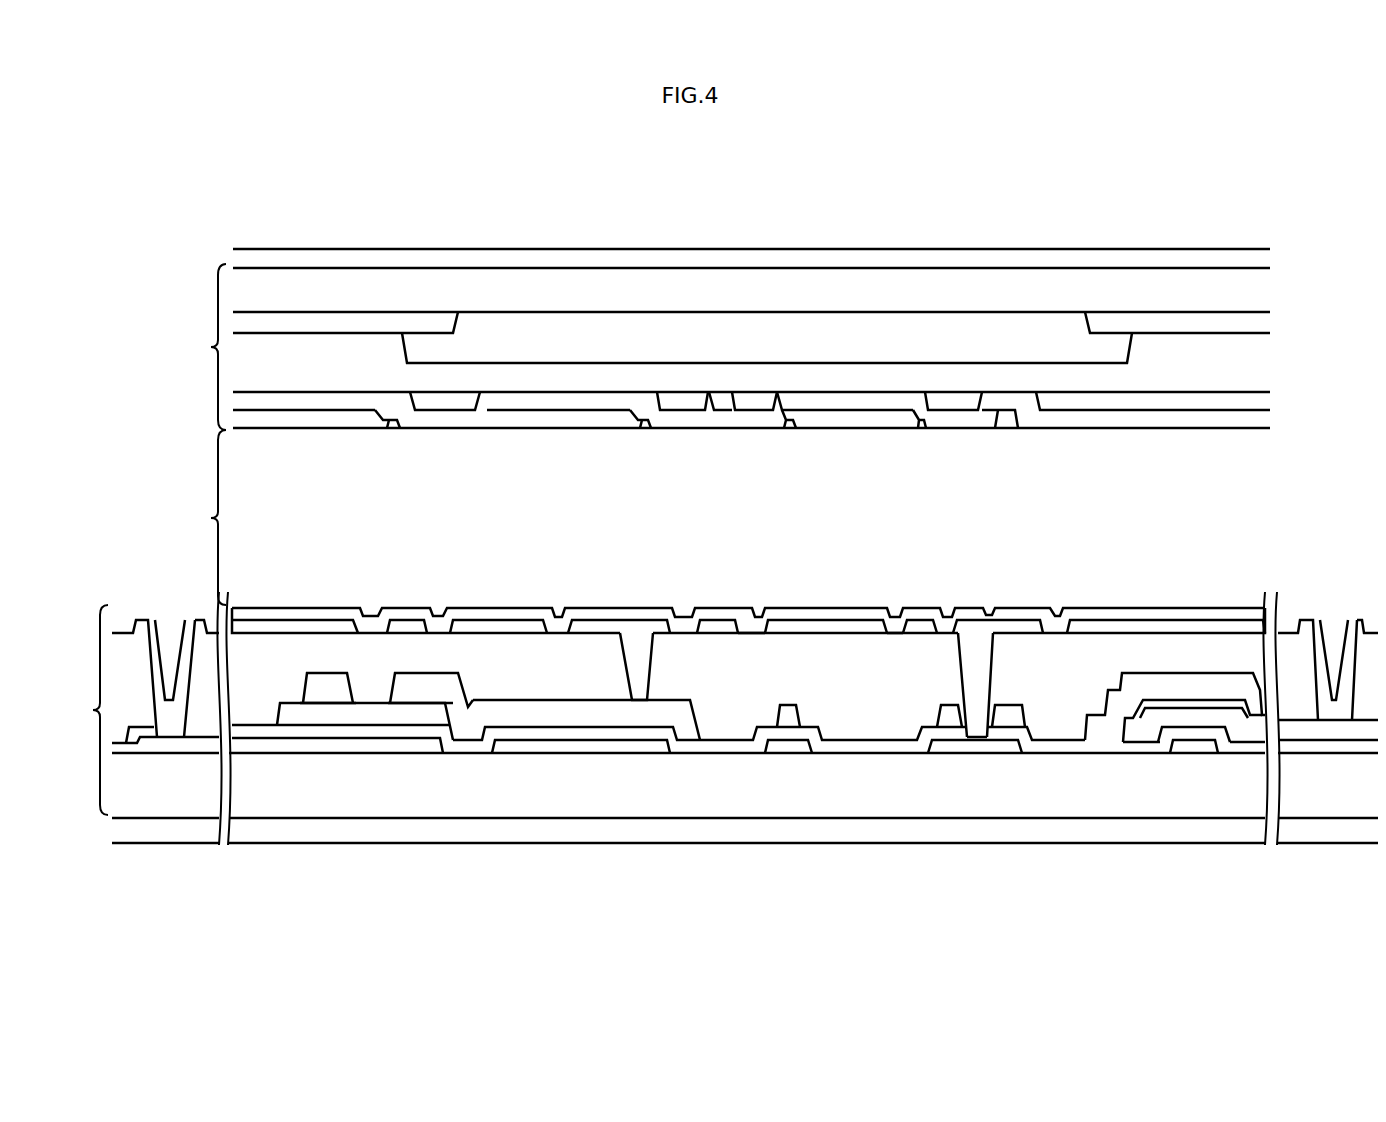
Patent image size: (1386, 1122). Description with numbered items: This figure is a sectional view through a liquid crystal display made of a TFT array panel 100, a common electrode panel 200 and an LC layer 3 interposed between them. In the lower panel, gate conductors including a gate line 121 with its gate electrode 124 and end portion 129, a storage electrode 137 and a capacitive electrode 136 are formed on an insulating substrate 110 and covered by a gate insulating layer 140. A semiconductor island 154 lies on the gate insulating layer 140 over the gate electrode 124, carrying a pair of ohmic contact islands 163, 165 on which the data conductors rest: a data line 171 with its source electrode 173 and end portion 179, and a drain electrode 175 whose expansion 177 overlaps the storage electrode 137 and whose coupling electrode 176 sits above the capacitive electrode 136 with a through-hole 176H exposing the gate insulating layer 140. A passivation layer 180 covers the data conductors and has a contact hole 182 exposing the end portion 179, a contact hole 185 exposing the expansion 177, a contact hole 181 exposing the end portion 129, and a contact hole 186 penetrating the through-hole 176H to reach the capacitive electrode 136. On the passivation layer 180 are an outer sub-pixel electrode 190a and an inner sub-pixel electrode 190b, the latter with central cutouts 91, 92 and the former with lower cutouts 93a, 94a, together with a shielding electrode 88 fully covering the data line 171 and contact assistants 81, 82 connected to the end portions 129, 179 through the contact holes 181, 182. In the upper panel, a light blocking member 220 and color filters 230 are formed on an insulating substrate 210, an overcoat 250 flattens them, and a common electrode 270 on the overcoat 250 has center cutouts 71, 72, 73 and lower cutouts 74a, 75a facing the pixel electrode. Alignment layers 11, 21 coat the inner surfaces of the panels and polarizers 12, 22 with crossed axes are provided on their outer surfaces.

The LC layer 3 is at (209, 517).
The alignment layer 11 is at (301, 606).
The polarizer 12 is at (123, 830).
The alignment layer 21 is at (288, 410).
The polarizer 22 is at (245, 258).
The center cutout 71 is at (981, 398).
The center cutout 72 is at (919, 398).
The center cutout 73 is at (783, 398).
The lower cutout 74a is at (481, 398).
The lower cutout 75a is at (377, 398).
The contact assistant 81 is at (145, 628).
The contact assistant 82 is at (1307, 626).
The shielding electrode 88 is at (252, 628).
The central cutout 91 is at (937, 633).
The central cutout 92 is at (894, 622).
The lower cutout 93a is at (745, 618).
The lower cutout 94a is at (549, 609).
The TFT array panel 100 is at (74, 710).
The insulating substrate 110 is at (677, 793).
The gate line 121 is at (1185, 747).
The gate electrode 124 is at (262, 747).
The end portion 129 is at (173, 747).
The capacitive electrode 136 is at (793, 747).
The storage electrode 137 is at (563, 747).
The gate insulating layer 140 is at (872, 747).
The semiconductor island 154 is at (363, 717).
The ohmic contact island 163 is at (317, 703).
The ohmic contact island 165 is at (415, 703).
The data line 171 is at (1108, 727).
The source electrode 173 is at (333, 687).
The drain electrode 175 is at (433, 687).
The coupling electrode 176 is at (768, 718).
The through-hole 176H is at (972, 700).
The expansion 177 is at (620, 713).
The end portion 179 is at (1328, 730).
The passivation layer 180 is at (805, 665).
The contact hole 181 is at (192, 667).
The contact hole 182 is at (1353, 657).
The contact hole 185 is at (633, 690).
The contact hole 186 is at (987, 720).
The outer sub-pixel electrode 190a is at (409, 620).
The inner sub-pixel electrode 190b is at (850, 623).
The common electrode panel 200 is at (195, 347).
The insulating substrate 210 is at (941, 290).
The light blocking member 220 is at (387, 322).
The color filter 230 is at (833, 336).
The overcoat 250 is at (590, 383).
The common electrode 270 is at (1167, 400).